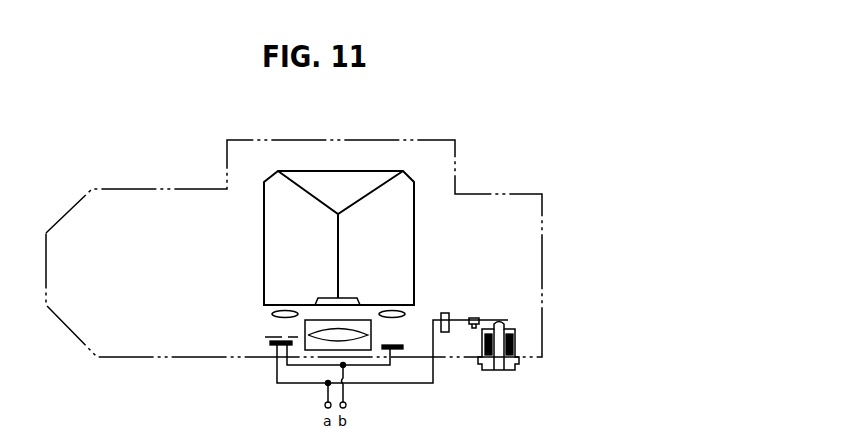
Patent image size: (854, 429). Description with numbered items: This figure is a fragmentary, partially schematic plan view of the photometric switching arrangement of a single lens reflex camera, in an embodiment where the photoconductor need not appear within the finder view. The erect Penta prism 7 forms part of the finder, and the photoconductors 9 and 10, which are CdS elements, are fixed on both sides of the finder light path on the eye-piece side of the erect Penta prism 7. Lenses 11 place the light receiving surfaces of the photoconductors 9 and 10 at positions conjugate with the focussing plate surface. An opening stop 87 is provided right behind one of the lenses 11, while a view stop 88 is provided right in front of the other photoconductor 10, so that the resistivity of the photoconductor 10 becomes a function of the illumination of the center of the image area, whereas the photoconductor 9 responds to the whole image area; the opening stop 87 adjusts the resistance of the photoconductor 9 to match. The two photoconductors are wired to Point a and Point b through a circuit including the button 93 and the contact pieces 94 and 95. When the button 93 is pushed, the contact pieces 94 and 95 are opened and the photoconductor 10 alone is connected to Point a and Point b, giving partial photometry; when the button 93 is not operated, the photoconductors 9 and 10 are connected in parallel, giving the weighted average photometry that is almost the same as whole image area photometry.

The erect Penta prism 7 is at (414, 240).
The photoconductor 9 is at (403, 348).
The photoconductor 10 is at (268, 343).
The lenses 11 is at (277, 313).
The opening stop 87 is at (392, 338).
The view stop 88 is at (269, 336).
The button 93 is at (498, 373).
The contact piece 94 is at (449, 326).
The contact piece 95 is at (472, 316).